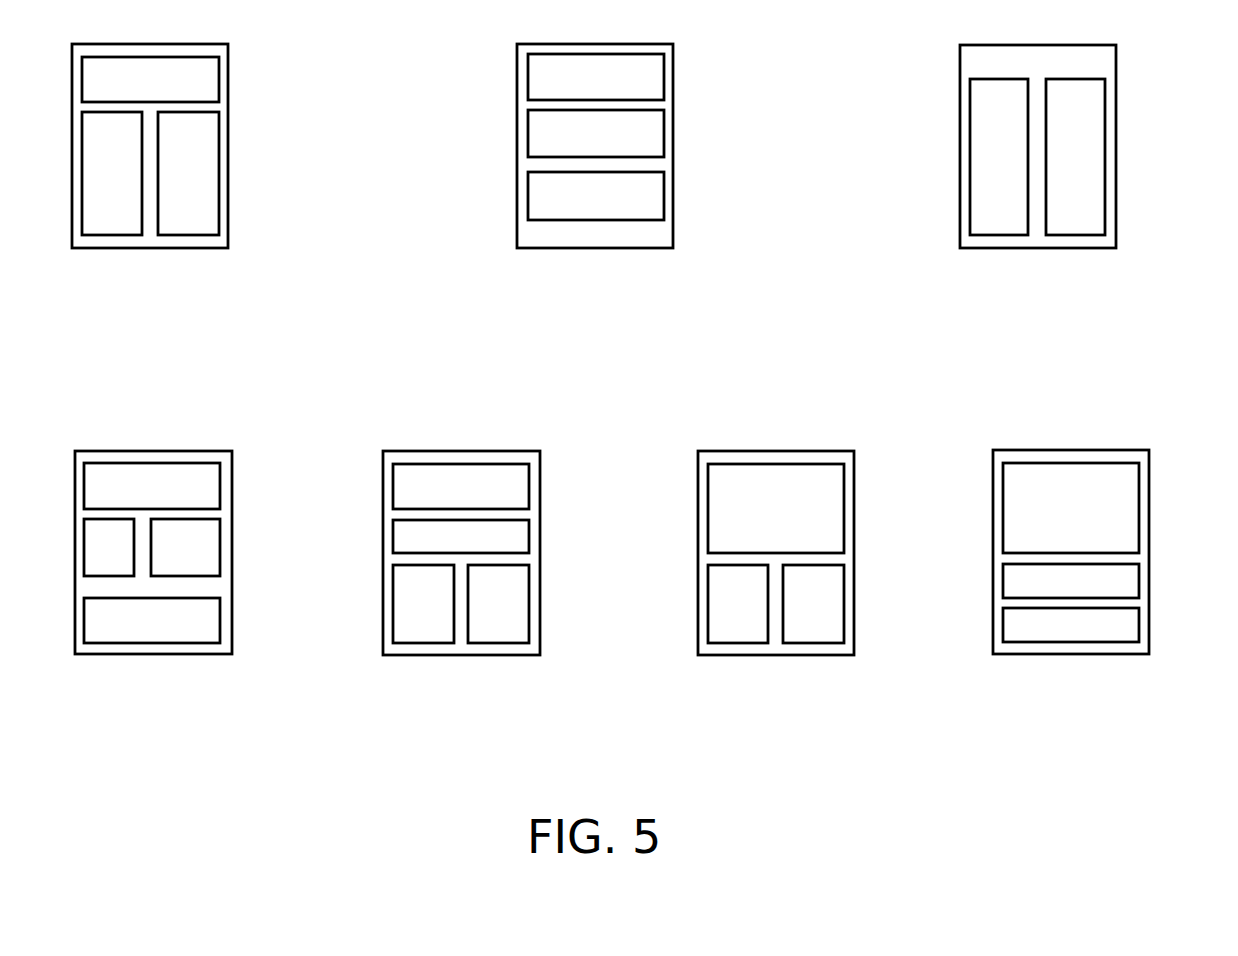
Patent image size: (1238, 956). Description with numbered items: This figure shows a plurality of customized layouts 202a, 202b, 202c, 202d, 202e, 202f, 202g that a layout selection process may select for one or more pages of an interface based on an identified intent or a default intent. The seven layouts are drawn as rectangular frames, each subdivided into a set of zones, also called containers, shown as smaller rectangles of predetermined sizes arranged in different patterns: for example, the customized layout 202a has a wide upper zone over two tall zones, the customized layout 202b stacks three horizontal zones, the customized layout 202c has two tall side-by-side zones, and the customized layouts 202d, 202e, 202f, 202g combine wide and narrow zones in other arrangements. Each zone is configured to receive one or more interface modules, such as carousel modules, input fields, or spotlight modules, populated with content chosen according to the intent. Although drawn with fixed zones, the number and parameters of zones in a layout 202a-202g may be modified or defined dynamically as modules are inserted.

The customized layout 202a is at (230, 215).
The customized layout 202b is at (675, 215).
The customized layout 202c is at (1117, 215).
The customized layout 202d is at (234, 628).
The customized layout 202e is at (542, 628).
The customized layout 202f is at (856, 628).
The customized layout 202g is at (1150, 628).